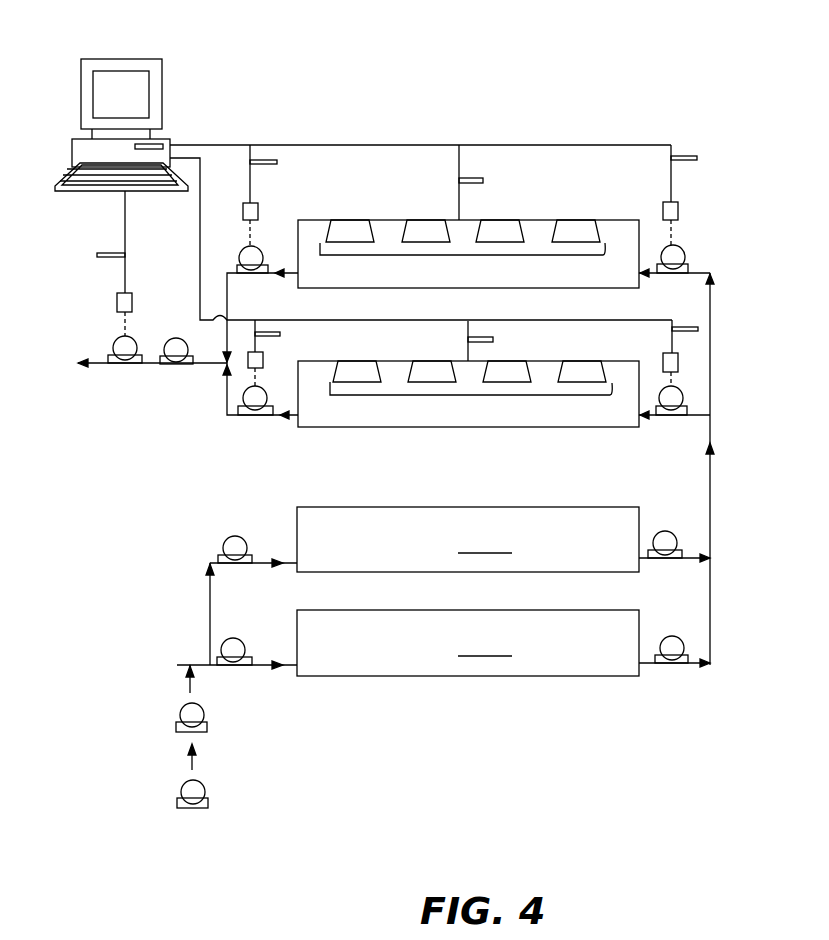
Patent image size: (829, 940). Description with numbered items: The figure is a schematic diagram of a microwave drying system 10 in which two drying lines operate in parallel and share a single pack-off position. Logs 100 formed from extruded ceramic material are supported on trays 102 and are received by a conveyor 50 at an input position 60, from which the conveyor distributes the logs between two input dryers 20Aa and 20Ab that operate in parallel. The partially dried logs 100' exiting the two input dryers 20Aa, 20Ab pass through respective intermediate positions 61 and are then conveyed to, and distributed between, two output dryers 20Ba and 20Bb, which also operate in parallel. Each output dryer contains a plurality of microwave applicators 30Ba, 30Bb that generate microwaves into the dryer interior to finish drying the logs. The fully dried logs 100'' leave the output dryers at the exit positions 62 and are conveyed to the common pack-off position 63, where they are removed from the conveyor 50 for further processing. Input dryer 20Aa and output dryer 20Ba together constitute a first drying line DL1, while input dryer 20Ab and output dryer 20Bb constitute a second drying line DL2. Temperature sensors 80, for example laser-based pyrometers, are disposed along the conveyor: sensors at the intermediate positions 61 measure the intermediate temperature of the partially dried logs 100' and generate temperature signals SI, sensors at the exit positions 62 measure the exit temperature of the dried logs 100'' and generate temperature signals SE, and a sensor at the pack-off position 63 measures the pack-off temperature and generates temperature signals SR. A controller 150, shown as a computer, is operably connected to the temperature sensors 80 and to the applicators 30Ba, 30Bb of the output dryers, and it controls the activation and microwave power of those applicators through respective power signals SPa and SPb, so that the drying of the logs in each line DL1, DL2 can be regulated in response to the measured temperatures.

The microwave drying system 10 is at (577, 61).
The controller 150 is at (103, 58).
The pack-off temperature signal SR is at (97, 255).
The exit temperature signal SE is at (278, 163).
The intermediate temperature signal SI is at (697, 157).
The power signal SPa is at (494, 340).
The power signal SPb is at (484, 181).
The temperature sensor 80 is at (247, 368).
The output dryer 20Bb is at (448, 220).
The output dryer 20Ba is at (350, 427).
The applicators 30Bb is at (463, 255).
The applicators 30Ba is at (472, 395).
The input dryer 20Ab is at (468, 539).
The input dryer 20Aa is at (468, 643).
The conveyor 50 is at (282, 277).
The exit position 62 is at (265, 279).
The pack-off position 63 is at (121, 372).
The intermediate position 61 is at (706, 259).
The input position 60 is at (175, 646).
The logs 100 is at (195, 747).
The partially dried logs 100' is at (715, 436).
The dried logs 100'' is at (135, 373).
The trays 102 is at (208, 729).
The drying line DL1 is at (587, 606).
The drying line DL2 is at (379, 290).